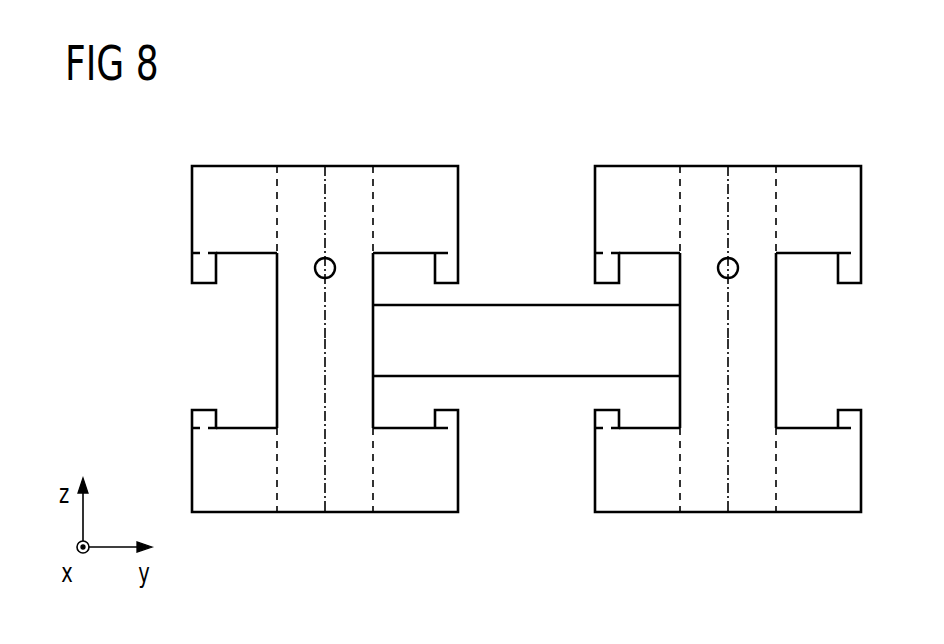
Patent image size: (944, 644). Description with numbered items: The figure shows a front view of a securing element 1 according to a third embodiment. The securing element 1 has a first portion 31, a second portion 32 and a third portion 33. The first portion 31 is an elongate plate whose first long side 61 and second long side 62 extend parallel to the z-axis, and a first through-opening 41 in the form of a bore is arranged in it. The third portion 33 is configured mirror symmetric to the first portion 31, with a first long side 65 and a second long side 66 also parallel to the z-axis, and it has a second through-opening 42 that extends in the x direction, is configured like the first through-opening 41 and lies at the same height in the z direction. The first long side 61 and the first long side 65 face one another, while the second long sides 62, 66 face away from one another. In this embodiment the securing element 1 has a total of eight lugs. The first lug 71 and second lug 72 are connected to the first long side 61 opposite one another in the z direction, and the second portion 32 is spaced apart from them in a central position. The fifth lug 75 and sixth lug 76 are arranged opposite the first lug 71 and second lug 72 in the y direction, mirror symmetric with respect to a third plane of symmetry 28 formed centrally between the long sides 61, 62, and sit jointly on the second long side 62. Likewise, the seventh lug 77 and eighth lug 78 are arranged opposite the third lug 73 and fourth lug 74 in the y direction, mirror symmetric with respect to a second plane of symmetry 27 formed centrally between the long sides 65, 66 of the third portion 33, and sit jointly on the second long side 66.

The securing element 1 is at (144, 226).
The second plane of symmetry 27 is at (325, 180).
The third plane of symmetry 28 is at (728, 180).
The first portion 31 is at (753, 500).
The second portion 32 is at (528, 366).
The third portion 33 is at (347, 500).
The first through-opening 41 is at (738, 266).
The second through-opening 42 is at (335, 266).
The first long side 61 is at (680, 392).
The second long side 62 is at (776, 338).
The first long side 65 is at (374, 393).
The second long side 66 is at (277, 338).
The first lug 71 is at (639, 178).
The second lug 72 is at (640, 500).
The third lug 73 is at (413, 178).
The fourth lug 74 is at (421, 500).
The fifth lug 75 is at (822, 178).
The sixth lug 76 is at (826, 500).
The seventh lug 77 is at (231, 178).
The eighth lug 78 is at (236, 500).